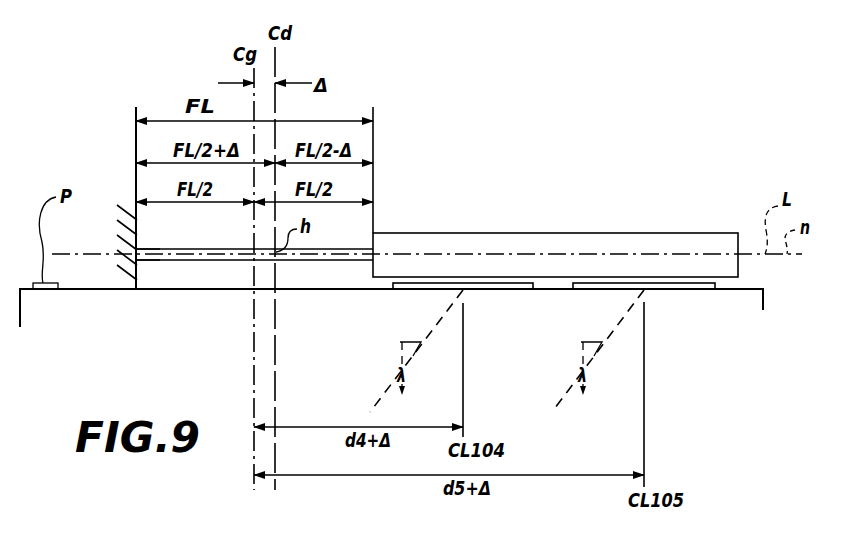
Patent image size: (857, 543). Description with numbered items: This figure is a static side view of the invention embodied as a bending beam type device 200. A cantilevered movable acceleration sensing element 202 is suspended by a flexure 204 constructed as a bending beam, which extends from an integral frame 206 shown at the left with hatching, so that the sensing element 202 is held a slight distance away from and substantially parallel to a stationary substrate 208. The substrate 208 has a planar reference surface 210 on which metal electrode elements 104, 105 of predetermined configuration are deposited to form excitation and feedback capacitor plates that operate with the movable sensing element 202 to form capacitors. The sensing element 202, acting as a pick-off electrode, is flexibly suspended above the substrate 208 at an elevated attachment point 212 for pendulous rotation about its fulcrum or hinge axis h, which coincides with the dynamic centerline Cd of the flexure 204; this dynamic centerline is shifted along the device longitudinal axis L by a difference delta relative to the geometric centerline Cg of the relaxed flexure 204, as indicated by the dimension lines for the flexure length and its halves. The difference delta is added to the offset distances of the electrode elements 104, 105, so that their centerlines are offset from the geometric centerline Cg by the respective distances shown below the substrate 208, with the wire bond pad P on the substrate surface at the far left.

The bending beam type device 200 is at (580, 199).
The cantilevered movable acceleration sensing element 202 is at (700, 233).
The flexure 204 is at (182, 249).
The integral frame 206 is at (111, 241).
The stationary substrate 208 is at (765, 300).
The reference surface 210 is at (745, 289).
The elevated attachment point 212 is at (144, 269).
The electrode element 104 is at (487, 289).
The electrode element 105 is at (683, 289).